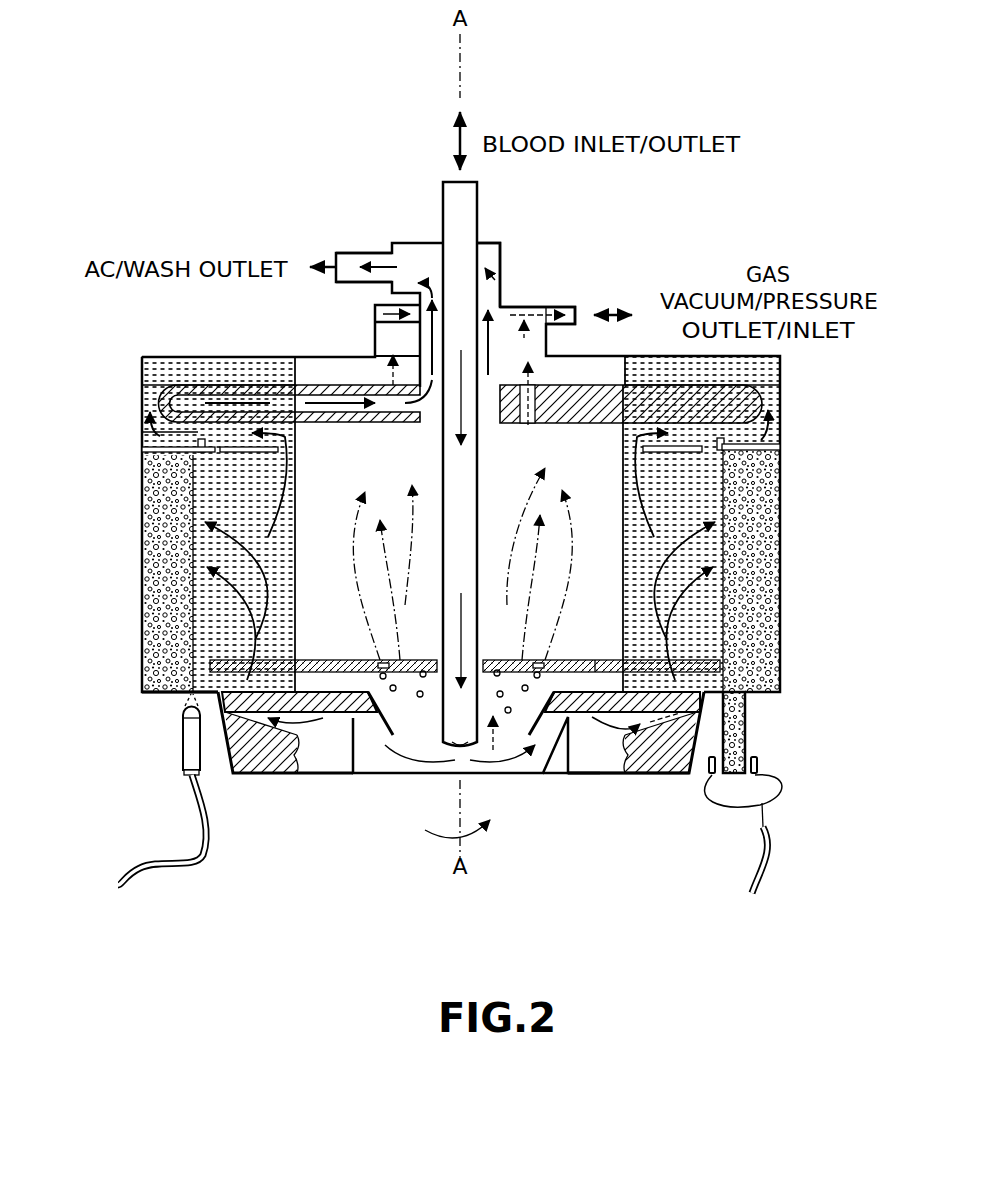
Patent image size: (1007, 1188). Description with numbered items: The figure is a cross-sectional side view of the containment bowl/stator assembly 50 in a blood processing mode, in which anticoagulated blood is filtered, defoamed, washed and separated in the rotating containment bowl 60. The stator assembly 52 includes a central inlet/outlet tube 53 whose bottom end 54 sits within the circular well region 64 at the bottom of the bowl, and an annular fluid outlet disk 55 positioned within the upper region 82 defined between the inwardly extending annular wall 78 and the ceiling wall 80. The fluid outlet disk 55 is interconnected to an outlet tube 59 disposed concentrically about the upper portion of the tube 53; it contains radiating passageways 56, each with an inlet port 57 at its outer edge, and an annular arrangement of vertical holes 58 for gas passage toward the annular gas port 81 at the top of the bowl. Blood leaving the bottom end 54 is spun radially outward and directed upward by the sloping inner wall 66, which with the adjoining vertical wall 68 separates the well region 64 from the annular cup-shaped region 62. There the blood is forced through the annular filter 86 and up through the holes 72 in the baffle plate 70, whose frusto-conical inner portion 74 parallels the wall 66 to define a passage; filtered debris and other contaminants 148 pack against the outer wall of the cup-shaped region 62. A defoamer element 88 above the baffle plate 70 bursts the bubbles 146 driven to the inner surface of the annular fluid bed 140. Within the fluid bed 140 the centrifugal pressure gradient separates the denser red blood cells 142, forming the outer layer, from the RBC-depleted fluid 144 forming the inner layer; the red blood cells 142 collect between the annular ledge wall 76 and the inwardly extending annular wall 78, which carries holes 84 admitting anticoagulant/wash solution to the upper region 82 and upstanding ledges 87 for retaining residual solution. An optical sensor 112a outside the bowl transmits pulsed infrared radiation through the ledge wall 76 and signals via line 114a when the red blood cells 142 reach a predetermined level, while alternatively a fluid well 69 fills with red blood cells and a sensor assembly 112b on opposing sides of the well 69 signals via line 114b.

The containment bowl/stator assembly 50 is at (228, 228).
The containment bowl 60 is at (124, 369).
The passageways 56 is at (180, 393).
The ceiling wall 80 is at (245, 357).
The fluid outlet disk 55 is at (330, 386).
The inlet port 57 is at (158, 403).
The vertical holes 58 is at (532, 386).
The outlet tube 59 is at (505, 262).
The annular gas port 81 is at (508, 308).
The upper region 82 is at (742, 368).
The upstanding ledges 87 is at (195, 441).
The holes 84 is at (200, 456).
The inwardly extending annular wall 78 is at (237, 455).
The red blood cells 142 is at (163, 542).
The stator assembly 52 is at (407, 458).
The annular fluid bed 140 is at (308, 638).
The central inlet/outlet tube 53 is at (478, 505).
The defoamer element 88 is at (410, 660).
The bubbles 146 is at (503, 660).
The baffle plate 70 is at (615, 660).
The frusto-conical inner portion 74 is at (588, 670).
The holes 72 is at (745, 690).
The RBC-depleted fluid 144 is at (748, 628).
The fluid well 69 is at (746, 727).
The circular well region 64 is at (436, 744).
The annular filter 86 is at (374, 738).
The bottom end 54 is at (466, 747).
The cup-shaped region 62 is at (310, 764).
The filtered debris and other contaminants 148 is at (650, 762).
The inner wall 66 is at (562, 772).
The vertical wall 68 is at (590, 770).
The annular ledge wall 76 is at (163, 697).
The optical sensor 112a is at (180, 737).
The line 114a is at (160, 865).
The sensor assembly 112b is at (793, 790).
The line 114b is at (748, 870).